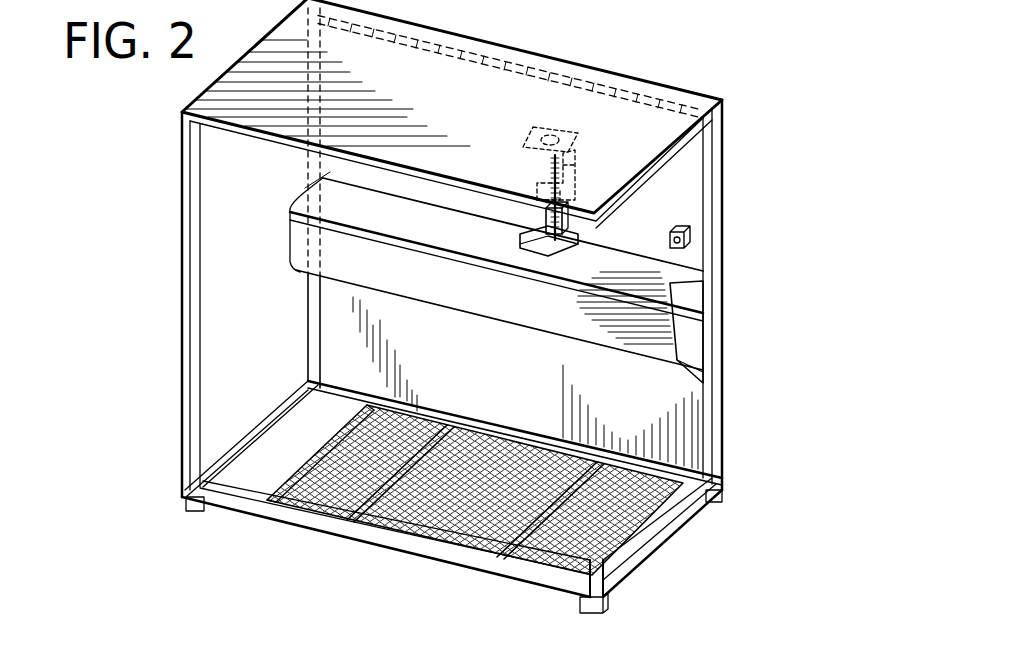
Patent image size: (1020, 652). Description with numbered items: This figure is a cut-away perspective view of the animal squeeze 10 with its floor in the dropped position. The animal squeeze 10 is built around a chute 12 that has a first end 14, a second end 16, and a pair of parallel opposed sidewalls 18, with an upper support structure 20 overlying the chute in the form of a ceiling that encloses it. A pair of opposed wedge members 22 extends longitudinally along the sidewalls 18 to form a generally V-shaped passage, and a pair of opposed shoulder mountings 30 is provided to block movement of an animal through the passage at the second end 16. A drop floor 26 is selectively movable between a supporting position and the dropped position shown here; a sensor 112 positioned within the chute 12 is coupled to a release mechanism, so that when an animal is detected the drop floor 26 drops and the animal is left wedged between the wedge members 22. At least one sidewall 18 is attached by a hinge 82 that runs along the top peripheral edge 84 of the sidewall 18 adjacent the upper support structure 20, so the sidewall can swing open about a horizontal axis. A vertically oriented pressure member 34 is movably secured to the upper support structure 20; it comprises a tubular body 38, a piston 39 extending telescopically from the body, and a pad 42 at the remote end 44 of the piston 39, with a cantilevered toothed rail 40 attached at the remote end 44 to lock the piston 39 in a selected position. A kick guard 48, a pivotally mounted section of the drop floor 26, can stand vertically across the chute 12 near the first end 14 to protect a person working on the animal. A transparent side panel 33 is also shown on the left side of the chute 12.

The animal squeeze 10 is at (758, 142).
The chute 12 is at (660, 80).
The first end 14 is at (181, 320).
The second end 16 is at (717, 244).
The sidewalls 18 is at (677, 167).
The upper support structure 20 is at (517, 84).
The wedge members 22 is at (652, 284).
The drop floor 26 is at (598, 514).
The shoulder mountings 30 is at (680, 313).
The side panel 33 is at (237, 222).
The pressure member 34 is at (557, 116).
The tubular body 38 is at (545, 172).
The piston 39 is at (550, 222).
The cantilevered toothed rail 40 is at (570, 268).
The pad 42 is at (548, 254).
The remote end 44 is at (528, 224).
The kick guard 48 is at (325, 488).
The hinge 82 is at (417, 44).
The top peripheral edge 84 is at (472, 84).
The sensor 112 is at (678, 226).